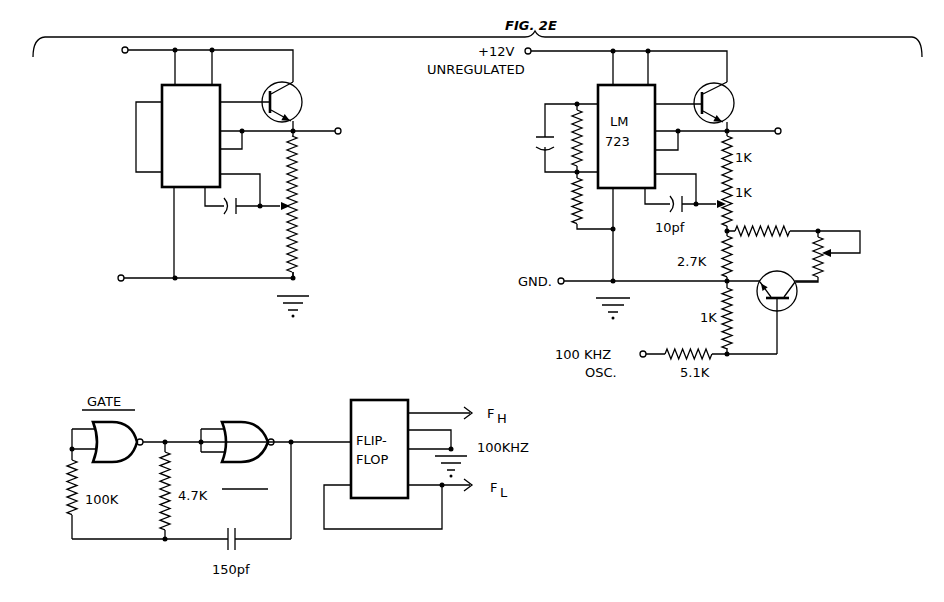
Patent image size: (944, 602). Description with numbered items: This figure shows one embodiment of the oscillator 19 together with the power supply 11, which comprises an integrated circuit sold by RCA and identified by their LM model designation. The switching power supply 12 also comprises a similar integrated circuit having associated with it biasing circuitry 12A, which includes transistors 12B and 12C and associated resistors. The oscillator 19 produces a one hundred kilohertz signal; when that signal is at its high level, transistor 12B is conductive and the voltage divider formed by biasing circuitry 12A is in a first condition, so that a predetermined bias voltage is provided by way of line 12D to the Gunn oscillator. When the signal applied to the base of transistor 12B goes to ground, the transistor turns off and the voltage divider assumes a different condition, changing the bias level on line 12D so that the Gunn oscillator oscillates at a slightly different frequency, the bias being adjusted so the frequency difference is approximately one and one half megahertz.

The power supply 11 is at (268, 164).
The switching power supply 12 is at (566, 221).
The biasing circuitry 12A is at (772, 266).
The transistor 12B is at (791, 306).
The transistor 12C is at (735, 102).
The line 12D is at (764, 136).
The oscillator 19 is at (251, 408).